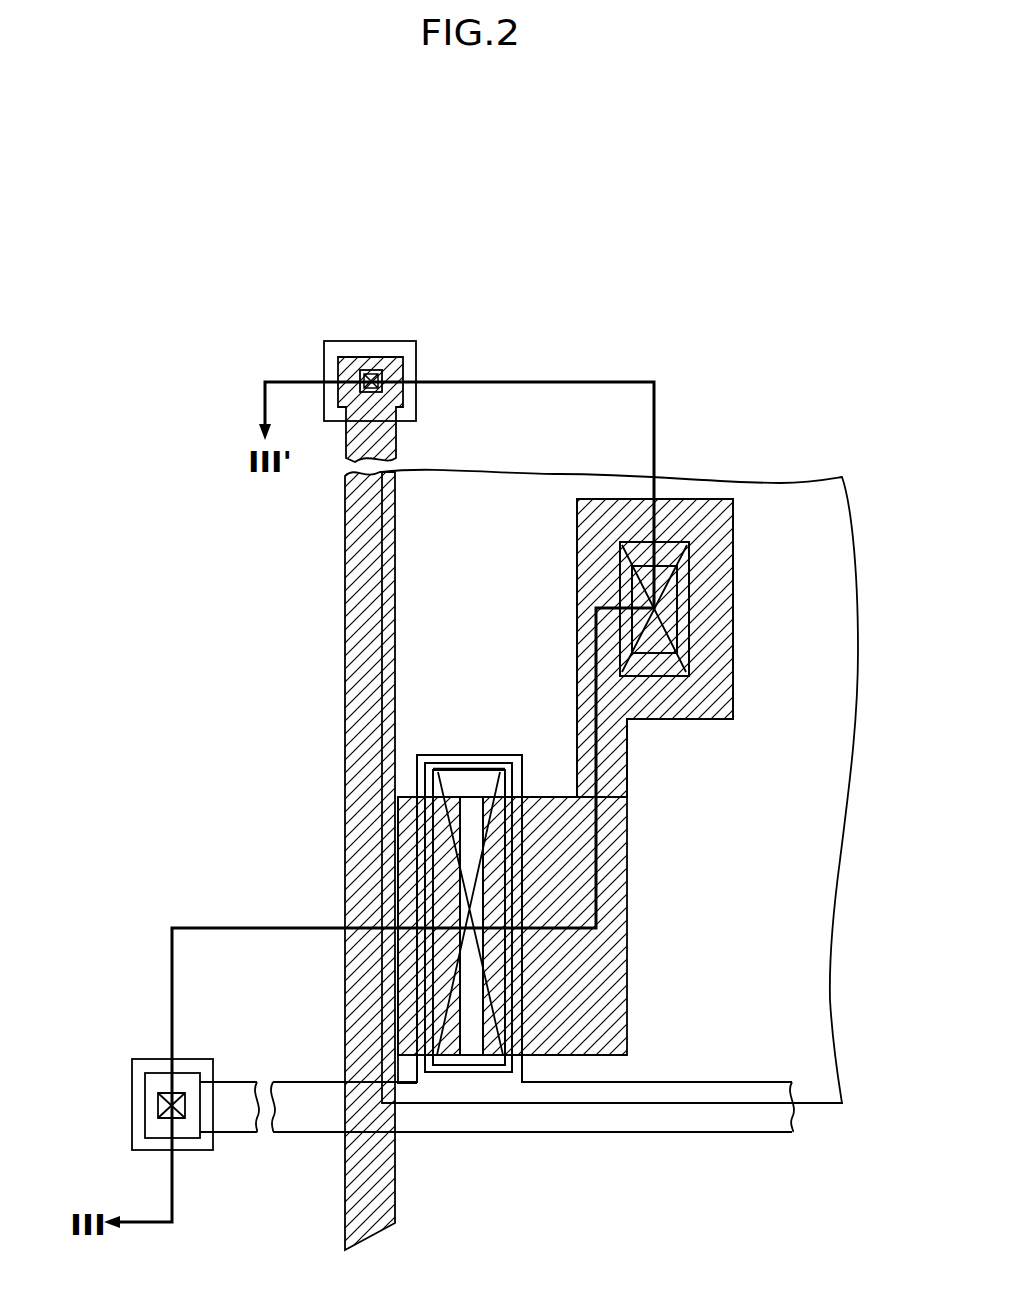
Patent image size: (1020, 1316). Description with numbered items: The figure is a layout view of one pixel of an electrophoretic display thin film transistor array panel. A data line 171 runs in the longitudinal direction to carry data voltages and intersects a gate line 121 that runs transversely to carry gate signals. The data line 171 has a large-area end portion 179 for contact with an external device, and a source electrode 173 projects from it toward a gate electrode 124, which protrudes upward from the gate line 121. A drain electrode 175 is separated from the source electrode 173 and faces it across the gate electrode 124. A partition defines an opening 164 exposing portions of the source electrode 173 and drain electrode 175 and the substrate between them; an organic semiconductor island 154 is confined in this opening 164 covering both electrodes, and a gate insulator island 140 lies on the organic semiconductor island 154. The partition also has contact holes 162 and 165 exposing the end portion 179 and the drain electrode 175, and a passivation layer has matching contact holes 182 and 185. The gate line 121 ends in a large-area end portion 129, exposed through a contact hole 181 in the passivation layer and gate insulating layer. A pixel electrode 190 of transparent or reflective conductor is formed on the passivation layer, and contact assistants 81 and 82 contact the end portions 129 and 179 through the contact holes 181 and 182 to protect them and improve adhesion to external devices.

The contact assistant 82 is at (412, 342).
The end portion of data line 179 is at (417, 355).
The contact hole 182 is at (367, 367).
The contact hole 162 is at (340, 377).
The data line 171 is at (345, 517).
The pixel electrode 190 is at (856, 700).
The contact hole 185 is at (733, 597).
The contact hole 165 is at (689, 630).
The drain electrode 175 is at (627, 980).
The source electrode 173 is at (455, 1058).
The opening 164 is at (440, 770).
The organic semiconductor island 154 is at (470, 913).
The gate insulator island 140 is at (475, 758).
The gate electrode 124 is at (510, 756).
The gate line 121 is at (622, 1113).
The contact assistant 81 is at (132, 1138).
The end portion of gate line 129 is at (144, 1080).
The contact hole 181 is at (158, 1105).